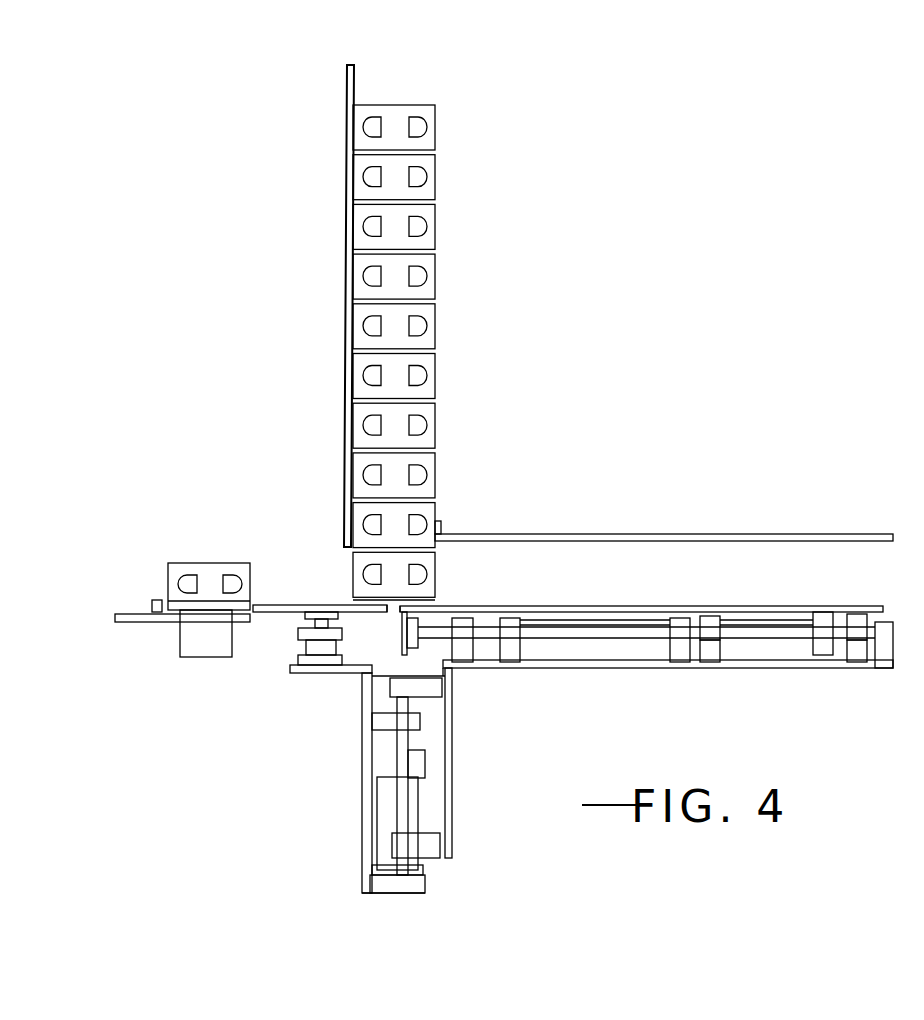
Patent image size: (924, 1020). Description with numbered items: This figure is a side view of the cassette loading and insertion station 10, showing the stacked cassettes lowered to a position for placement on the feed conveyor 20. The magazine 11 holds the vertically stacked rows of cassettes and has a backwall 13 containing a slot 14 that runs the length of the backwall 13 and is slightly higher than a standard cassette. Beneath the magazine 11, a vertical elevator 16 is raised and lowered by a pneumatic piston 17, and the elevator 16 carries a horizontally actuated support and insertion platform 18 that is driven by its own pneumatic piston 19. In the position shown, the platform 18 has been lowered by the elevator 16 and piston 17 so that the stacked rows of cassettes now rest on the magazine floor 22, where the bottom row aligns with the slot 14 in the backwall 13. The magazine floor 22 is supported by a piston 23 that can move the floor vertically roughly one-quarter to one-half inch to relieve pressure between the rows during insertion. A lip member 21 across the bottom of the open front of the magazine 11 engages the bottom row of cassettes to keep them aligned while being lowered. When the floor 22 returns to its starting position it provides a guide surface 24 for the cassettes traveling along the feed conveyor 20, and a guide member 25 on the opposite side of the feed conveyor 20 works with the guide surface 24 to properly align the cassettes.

The cassette loading and insertion station 10 is at (507, 394).
The magazine 11 is at (345, 332).
The backwall 13 is at (346, 388).
The slot 14 is at (345, 565).
The vertical elevator 16 is at (453, 728).
The pneumatic piston 17 is at (422, 801).
The support and insertion platform 18 is at (482, 605).
The pneumatic piston 19 is at (651, 655).
The feed conveyor 20 is at (190, 636).
The lip member 21 is at (441, 527).
The magazine floor 22 is at (365, 615).
The piston 23 is at (300, 648).
The guide surface 24 is at (255, 606).
The guide member 25 is at (150, 600).